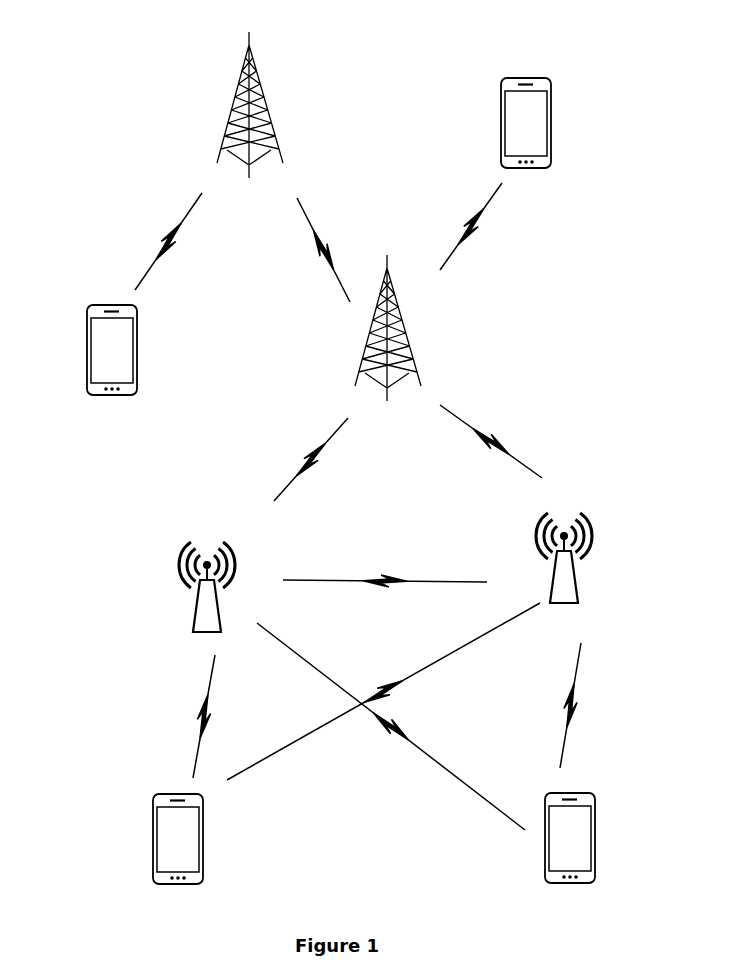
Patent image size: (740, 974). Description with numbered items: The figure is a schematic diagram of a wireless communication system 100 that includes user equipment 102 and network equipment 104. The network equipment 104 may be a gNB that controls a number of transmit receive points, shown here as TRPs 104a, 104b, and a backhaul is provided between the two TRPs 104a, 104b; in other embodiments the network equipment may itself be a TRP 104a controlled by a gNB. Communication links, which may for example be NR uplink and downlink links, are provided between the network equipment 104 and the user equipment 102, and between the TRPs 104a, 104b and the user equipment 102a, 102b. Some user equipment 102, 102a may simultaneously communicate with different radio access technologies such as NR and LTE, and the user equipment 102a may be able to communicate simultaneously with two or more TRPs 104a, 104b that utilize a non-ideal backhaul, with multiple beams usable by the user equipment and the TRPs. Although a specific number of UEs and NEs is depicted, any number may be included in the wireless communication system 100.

The wireless communication system 100 is at (118, 55).
The user equipment (UE) 102 is at (320, 236).
The network equipment (NE) 104 is at (232, 107).
The transmit receive point (TRP) 104a is at (177, 587).
The small base station 104b is at (597, 558).
The user equipment (UE) 102a is at (146, 839).
The user equipment 102b is at (601, 838).